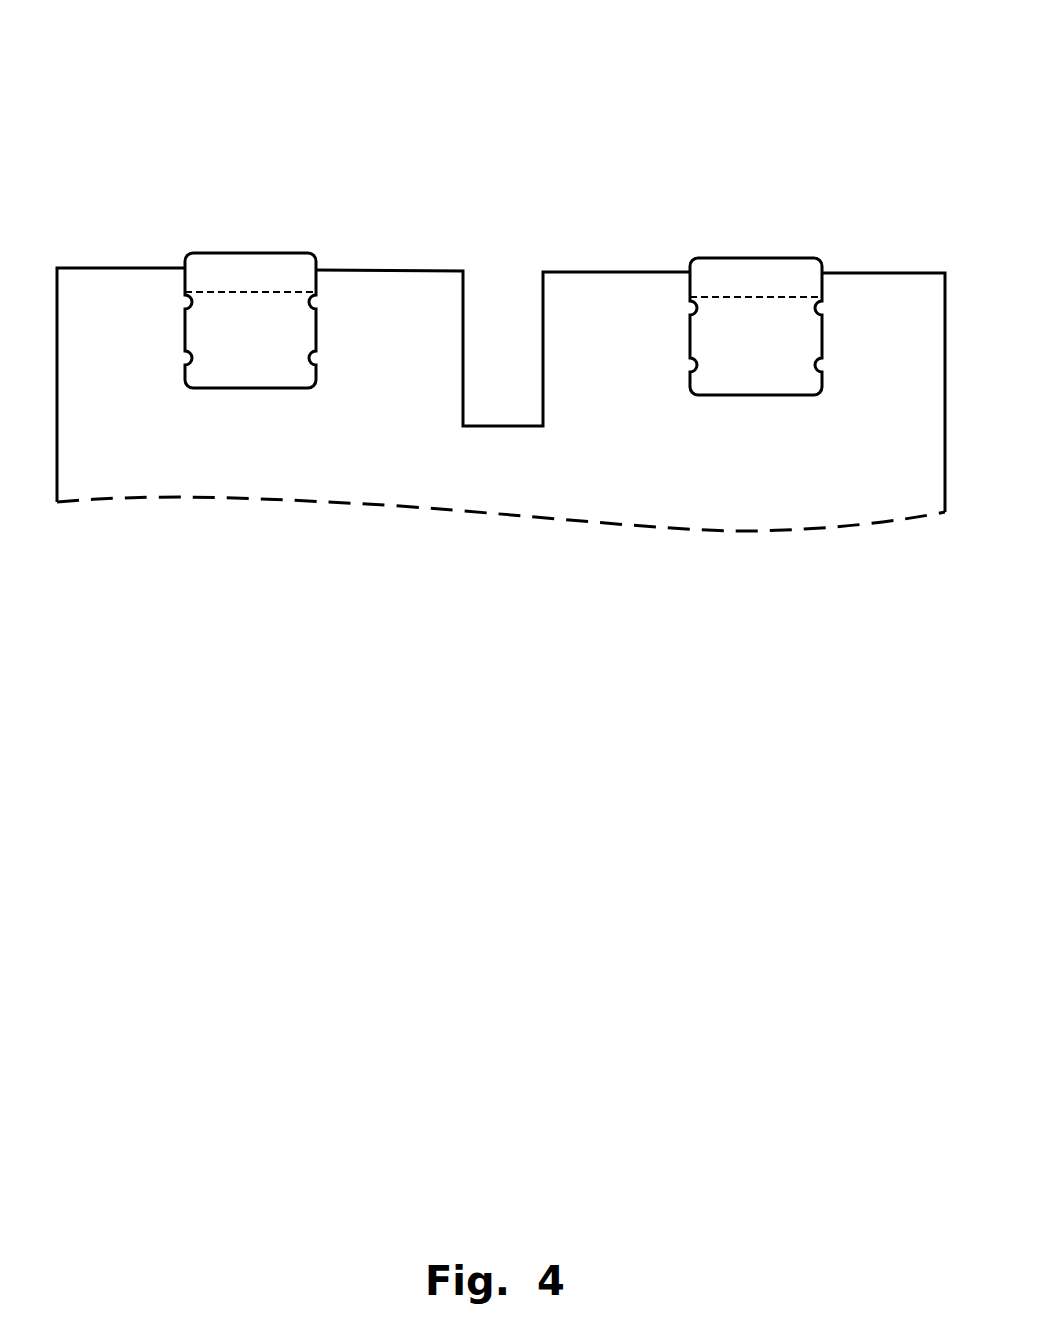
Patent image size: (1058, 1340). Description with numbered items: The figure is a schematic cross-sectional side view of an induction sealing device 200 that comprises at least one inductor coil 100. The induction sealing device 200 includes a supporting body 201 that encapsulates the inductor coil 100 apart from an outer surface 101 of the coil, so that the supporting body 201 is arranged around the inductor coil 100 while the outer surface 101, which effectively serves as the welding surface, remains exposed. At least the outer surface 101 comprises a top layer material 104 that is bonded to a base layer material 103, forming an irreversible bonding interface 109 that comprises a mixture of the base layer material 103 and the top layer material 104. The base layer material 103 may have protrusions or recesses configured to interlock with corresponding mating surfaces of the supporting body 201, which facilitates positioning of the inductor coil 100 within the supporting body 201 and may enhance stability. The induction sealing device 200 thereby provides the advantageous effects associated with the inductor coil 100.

The induction sealing device 200 is at (195, 63).
The supporting body 201 is at (150, 297).
The inductor coil 100 is at (682, 228).
The outer surface 101 is at (263, 250).
The top layer material 104 is at (237, 267).
The irreversible bonding interface 109 is at (282, 293).
The base layer material 103 is at (282, 368).